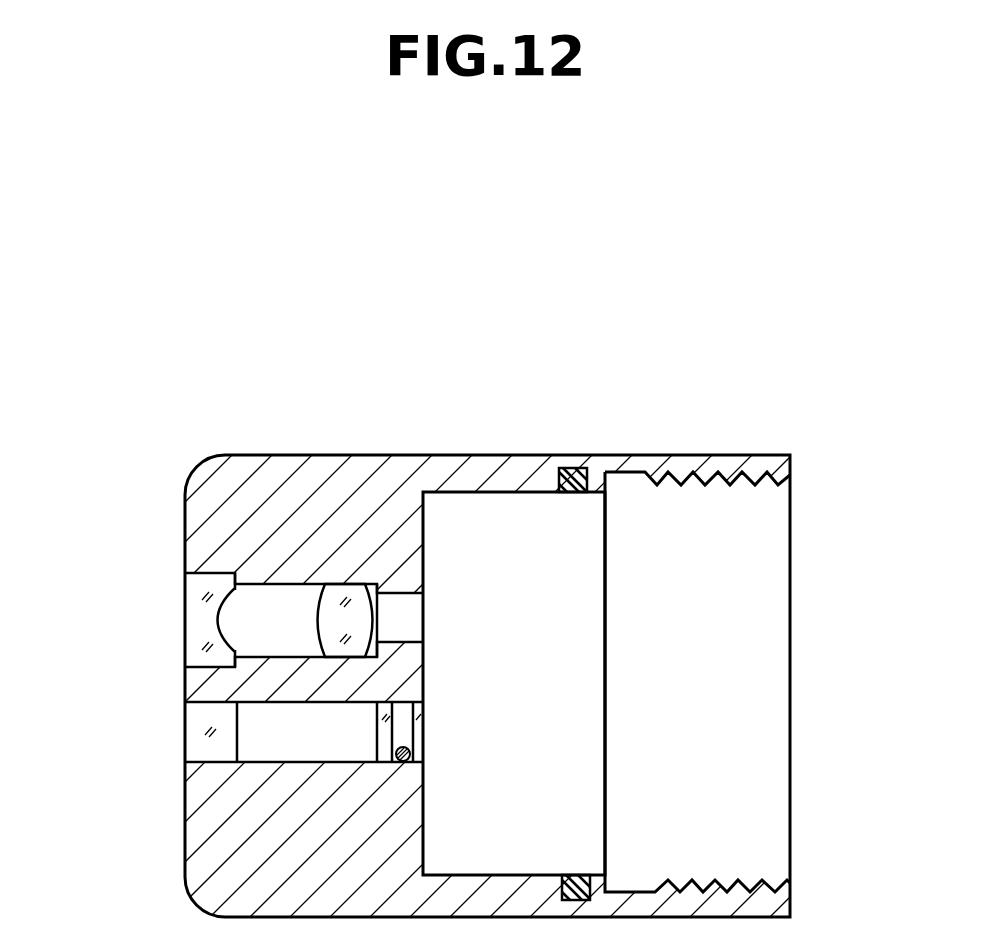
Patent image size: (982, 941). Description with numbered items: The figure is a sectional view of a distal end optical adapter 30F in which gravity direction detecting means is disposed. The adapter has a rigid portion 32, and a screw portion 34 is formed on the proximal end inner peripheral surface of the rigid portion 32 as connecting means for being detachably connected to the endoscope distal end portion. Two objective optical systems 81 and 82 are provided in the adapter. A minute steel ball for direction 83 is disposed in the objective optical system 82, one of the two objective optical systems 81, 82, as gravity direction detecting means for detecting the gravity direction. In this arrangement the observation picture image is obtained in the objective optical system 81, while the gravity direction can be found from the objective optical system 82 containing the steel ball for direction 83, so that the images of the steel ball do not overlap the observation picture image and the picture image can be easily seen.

The distal end optical adapter 30F is at (336, 456).
The rigid portion 32 is at (443, 470).
The screw portion 34 is at (735, 487).
The objective optical system 81 is at (184, 627).
The objective optical system 82 is at (184, 745).
The steel ball for direction 83 is at (403, 746).